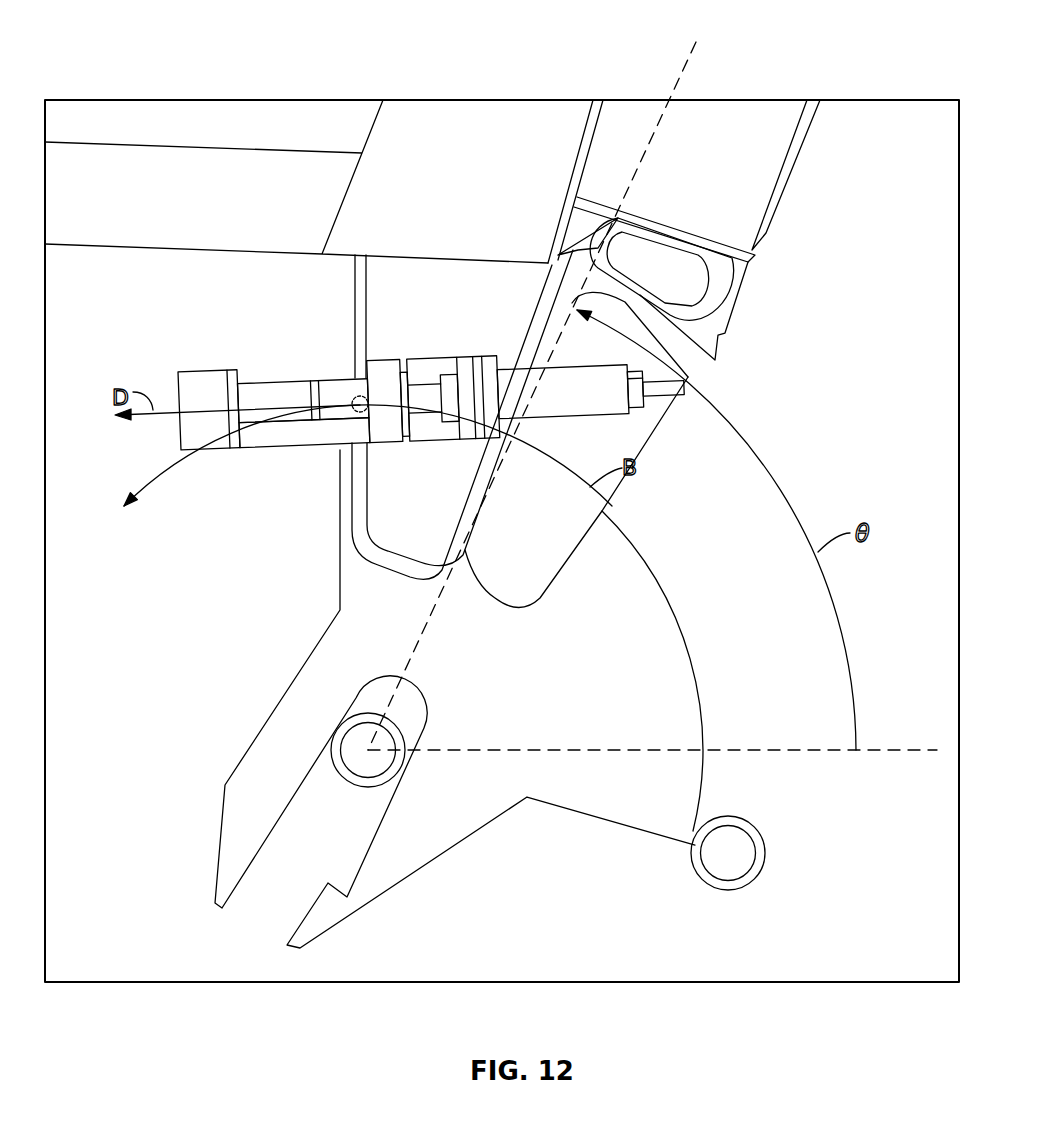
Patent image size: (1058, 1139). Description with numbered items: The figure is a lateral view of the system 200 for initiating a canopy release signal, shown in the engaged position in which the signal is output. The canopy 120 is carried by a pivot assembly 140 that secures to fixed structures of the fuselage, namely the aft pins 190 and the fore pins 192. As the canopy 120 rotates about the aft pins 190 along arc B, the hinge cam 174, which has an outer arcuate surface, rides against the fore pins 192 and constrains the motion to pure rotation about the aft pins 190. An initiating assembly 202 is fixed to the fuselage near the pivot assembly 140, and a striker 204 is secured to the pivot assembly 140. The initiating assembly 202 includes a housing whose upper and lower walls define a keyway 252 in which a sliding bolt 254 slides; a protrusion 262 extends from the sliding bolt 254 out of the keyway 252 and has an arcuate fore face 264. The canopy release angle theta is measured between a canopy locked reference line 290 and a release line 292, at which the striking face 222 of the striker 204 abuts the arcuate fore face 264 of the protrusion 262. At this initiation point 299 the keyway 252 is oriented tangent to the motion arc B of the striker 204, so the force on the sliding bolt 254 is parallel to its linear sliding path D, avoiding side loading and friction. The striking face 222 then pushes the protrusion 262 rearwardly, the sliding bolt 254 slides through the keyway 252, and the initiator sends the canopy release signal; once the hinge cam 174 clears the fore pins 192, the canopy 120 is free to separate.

The canopy 120 is at (380, 66).
The pivot assembly 140 is at (405, 915).
The hinge cam 174 is at (700, 683).
The aft pins 190 is at (347, 783).
The fore pins 192 is at (765, 852).
The system for initiating a canopy release signal 200 is at (373, 415).
The initiating assembly 202 is at (546, 395).
The striker 204 is at (352, 443).
The striking face 222 is at (384, 372).
The keyway 252 is at (209, 410).
The sliding bolt 254 is at (302, 401).
The protrusion 262 is at (388, 400).
The arcuate fore face 264 is at (304, 433).
The canopy locked reference line 290 is at (897, 750).
The release line 292 is at (700, 48).
The initiation point 299 is at (307, 449).